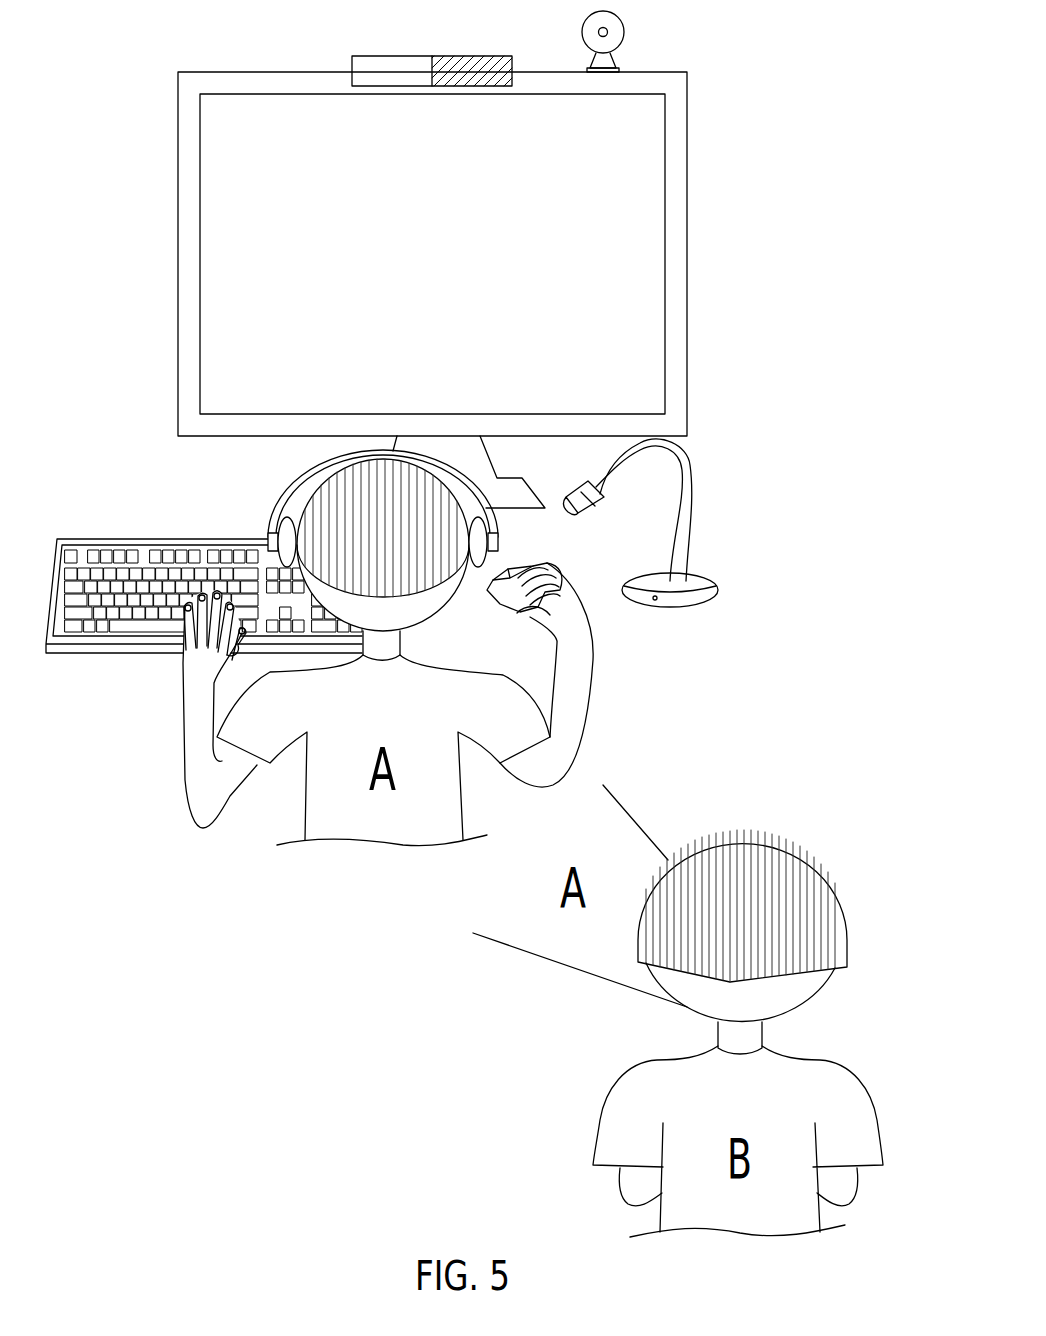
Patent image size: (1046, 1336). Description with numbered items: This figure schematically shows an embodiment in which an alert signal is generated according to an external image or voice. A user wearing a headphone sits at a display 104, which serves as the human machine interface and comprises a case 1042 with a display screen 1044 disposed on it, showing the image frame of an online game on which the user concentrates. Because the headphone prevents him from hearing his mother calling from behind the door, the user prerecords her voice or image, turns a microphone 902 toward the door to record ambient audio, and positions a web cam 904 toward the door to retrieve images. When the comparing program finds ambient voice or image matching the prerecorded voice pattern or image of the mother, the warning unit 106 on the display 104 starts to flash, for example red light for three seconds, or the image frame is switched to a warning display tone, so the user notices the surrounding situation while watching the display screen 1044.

The display 104 is at (88, 6).
The case 1042 is at (240, 85).
The display screen 1044 is at (220, 152).
The warning unit 106 is at (402, 55).
The web cam 904 is at (622, 23).
The microphone 902 is at (692, 502).